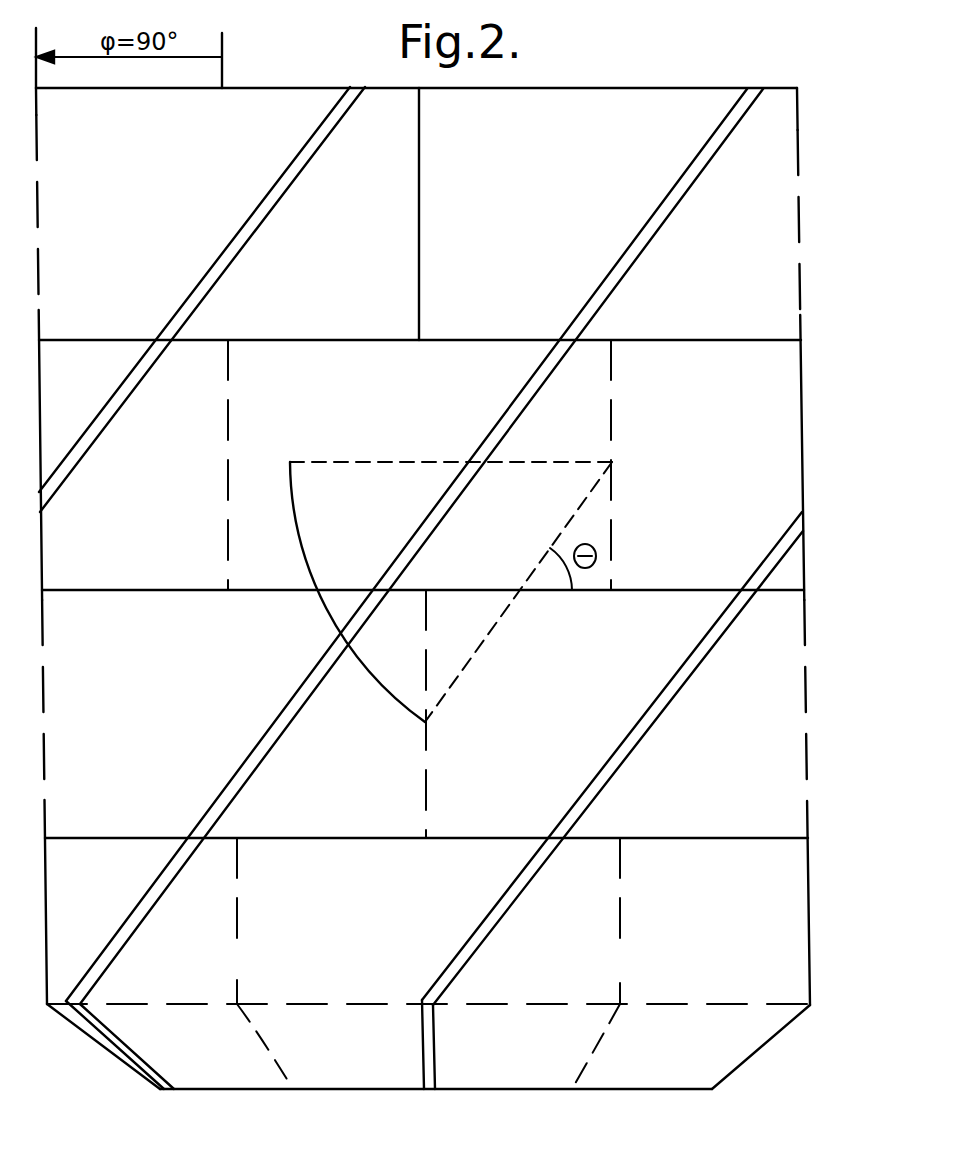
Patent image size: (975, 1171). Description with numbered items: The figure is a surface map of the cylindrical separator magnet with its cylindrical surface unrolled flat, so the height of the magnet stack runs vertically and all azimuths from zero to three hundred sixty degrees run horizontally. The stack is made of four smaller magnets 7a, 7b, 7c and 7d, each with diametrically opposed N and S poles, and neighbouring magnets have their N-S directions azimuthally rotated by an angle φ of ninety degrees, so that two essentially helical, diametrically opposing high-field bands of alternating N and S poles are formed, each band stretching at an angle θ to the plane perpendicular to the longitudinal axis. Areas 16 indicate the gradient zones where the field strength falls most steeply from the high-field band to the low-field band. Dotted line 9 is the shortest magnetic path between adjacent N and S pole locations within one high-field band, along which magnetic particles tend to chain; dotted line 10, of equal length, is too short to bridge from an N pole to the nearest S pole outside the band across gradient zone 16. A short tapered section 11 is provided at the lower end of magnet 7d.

The areas 16 is at (337, 109).
The smaller magnet 7a is at (780, 274).
The smaller magnet 7b is at (778, 412).
The smaller magnet 7c is at (777, 647).
The smaller magnet 7d is at (790, 955).
The dotted line 10 is at (430, 461).
The dotted line 9 is at (482, 643).
The tapered section 11 is at (773, 1037).